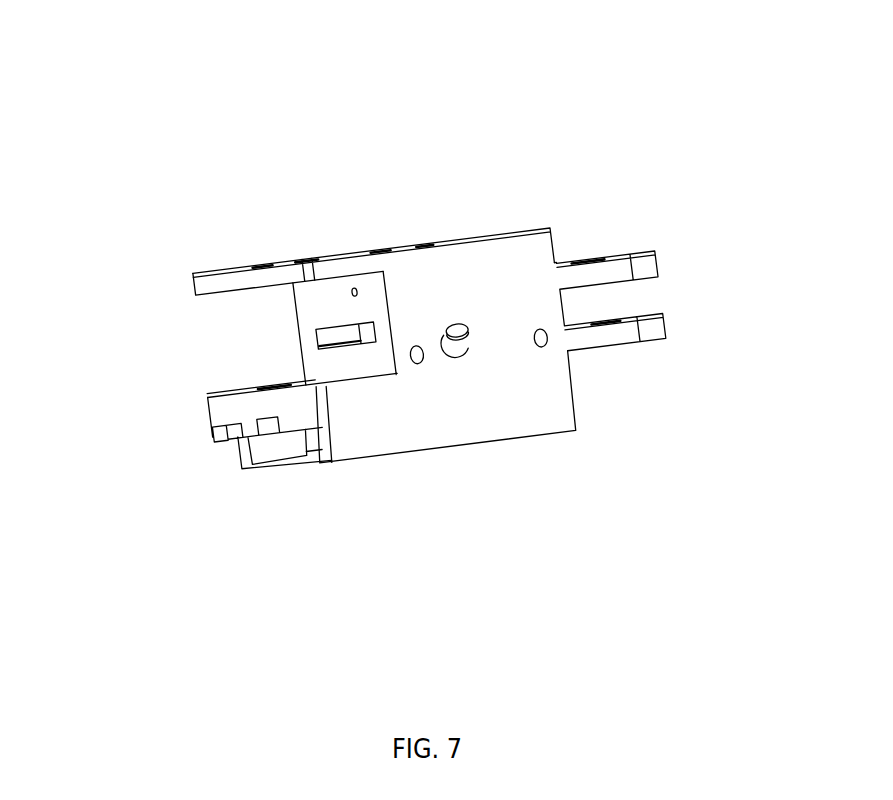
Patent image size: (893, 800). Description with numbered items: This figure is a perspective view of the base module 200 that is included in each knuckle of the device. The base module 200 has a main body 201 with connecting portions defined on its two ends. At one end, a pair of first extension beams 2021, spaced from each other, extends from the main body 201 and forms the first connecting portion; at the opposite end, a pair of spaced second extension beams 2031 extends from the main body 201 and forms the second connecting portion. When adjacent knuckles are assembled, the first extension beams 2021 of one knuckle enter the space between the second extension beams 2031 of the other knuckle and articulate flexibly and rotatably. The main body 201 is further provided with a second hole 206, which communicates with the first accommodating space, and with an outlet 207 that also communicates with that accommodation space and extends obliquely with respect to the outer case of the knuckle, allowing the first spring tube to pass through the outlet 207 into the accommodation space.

The base module 200 is at (405, 51).
The main body 201 is at (513, 410).
The first extension beams 2021 is at (583, 272).
The second extension beams 2031 is at (213, 280).
The second hole 206 is at (327, 329).
The outlet 207 is at (450, 350).